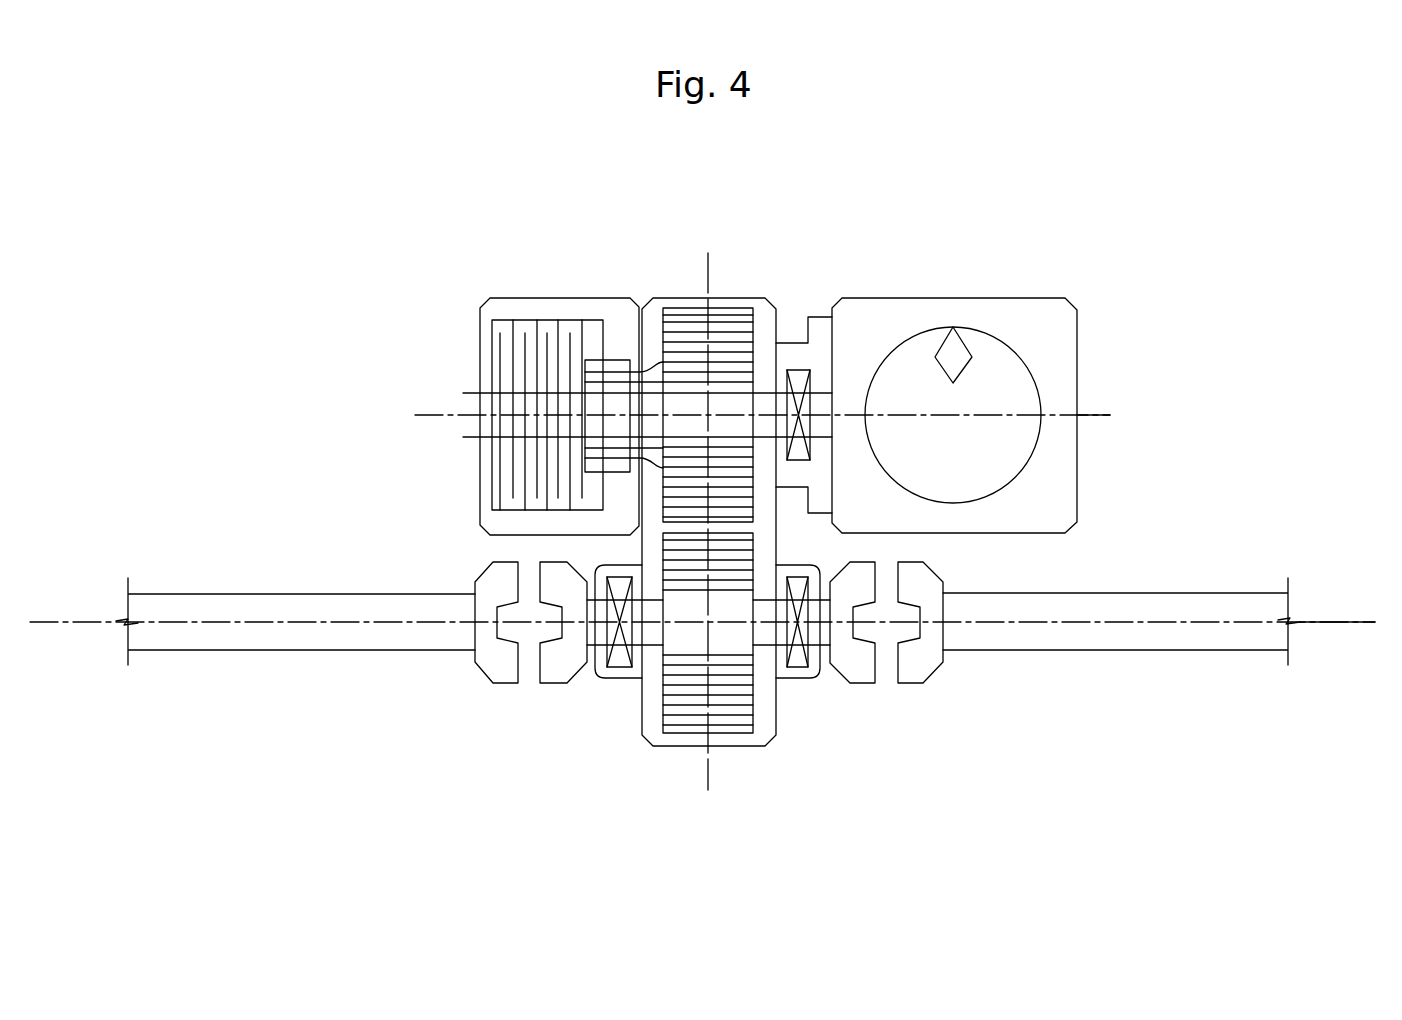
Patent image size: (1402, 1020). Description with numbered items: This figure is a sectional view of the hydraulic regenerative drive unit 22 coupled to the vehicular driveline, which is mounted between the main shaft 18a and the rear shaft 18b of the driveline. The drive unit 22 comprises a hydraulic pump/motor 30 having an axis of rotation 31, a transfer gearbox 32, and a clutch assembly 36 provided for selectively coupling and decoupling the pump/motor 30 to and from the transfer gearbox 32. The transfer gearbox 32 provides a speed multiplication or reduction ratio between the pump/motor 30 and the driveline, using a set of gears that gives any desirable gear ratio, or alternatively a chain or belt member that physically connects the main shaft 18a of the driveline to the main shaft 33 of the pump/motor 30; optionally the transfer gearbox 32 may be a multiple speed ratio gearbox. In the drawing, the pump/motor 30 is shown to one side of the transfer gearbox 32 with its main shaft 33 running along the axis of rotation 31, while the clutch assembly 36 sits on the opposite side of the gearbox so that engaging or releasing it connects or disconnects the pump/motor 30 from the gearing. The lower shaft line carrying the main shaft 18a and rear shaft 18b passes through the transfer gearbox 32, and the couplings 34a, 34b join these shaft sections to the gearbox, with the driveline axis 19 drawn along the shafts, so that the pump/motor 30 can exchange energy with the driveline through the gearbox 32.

The clutch assembly 36 is at (497, 284).
The hydraulic regenerative drive unit 22 is at (795, 283).
The main shaft of the pump/motor 33 is at (818, 415).
The hydraulic pump/motor 30 is at (1083, 290).
The axis of rotation 31 is at (1101, 415).
The transfer gearbox 32 is at (780, 752).
The coupling 34a is at (505, 673).
The coupling 34b is at (845, 673).
The main shaft 18a is at (350, 580).
The rear shaft 18b is at (1086, 670).
The shaft axis 19 is at (1317, 622).